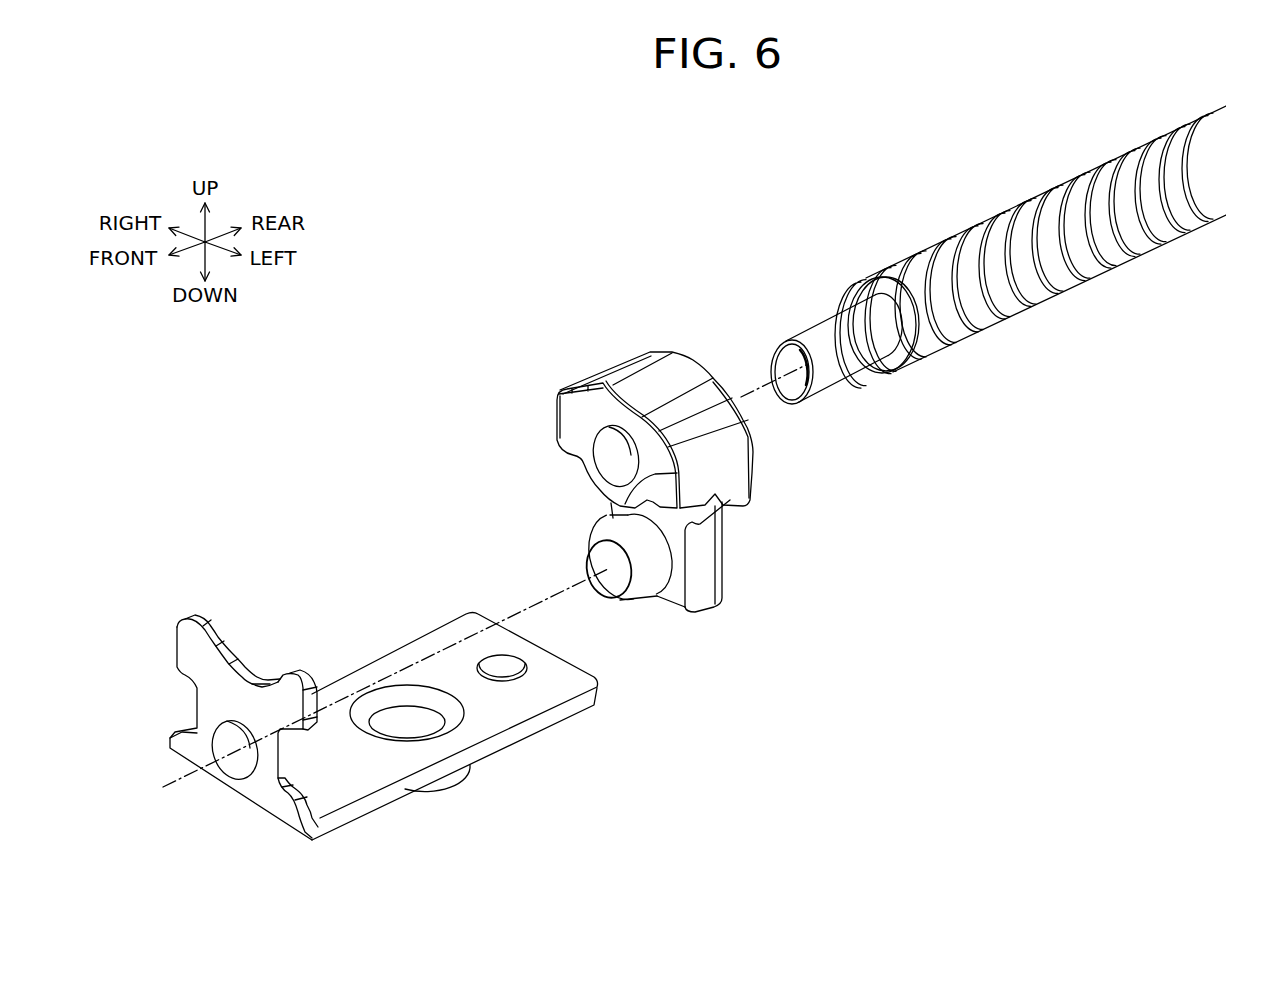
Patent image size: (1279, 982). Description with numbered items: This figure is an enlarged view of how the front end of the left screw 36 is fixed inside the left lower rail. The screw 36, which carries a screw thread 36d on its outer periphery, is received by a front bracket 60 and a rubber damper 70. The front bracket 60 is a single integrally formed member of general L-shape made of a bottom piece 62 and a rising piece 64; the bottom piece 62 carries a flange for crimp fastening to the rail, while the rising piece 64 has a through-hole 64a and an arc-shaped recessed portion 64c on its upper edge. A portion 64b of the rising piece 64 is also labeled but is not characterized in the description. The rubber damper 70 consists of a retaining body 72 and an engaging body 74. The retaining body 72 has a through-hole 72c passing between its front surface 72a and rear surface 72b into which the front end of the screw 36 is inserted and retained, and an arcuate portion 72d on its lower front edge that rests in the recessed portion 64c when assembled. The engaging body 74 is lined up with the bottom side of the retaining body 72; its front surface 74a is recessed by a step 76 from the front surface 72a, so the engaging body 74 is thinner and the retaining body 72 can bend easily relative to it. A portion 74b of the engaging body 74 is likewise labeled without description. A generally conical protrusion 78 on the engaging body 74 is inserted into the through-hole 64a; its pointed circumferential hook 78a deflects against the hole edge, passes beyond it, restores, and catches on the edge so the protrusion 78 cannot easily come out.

The screw 36 is at (1050, 181).
The screw thread 36d is at (980, 237).
The front bracket 60 is at (293, 507).
The bottom piece 62 is at (375, 665).
The rising piece 64 is at (207, 687).
The through-hole 64a is at (228, 765).
The bracket hump portion 64b is at (195, 647).
The recessed portion 64c is at (242, 675).
The rubber damper 70 is at (464, 467).
The retaining body 72 is at (645, 393).
The front surface 72a is at (572, 428).
The rear surface 72b is at (697, 357).
The through-hole 72c is at (606, 436).
The arcuate portion 72d is at (686, 474).
The engaging body 74 is at (651, 556).
The front surface 74a is at (677, 548).
The plate leg 74b is at (724, 544).
The step 76 is at (748, 506).
The protrusion 78 is at (613, 590).
The hook 78a is at (647, 583).